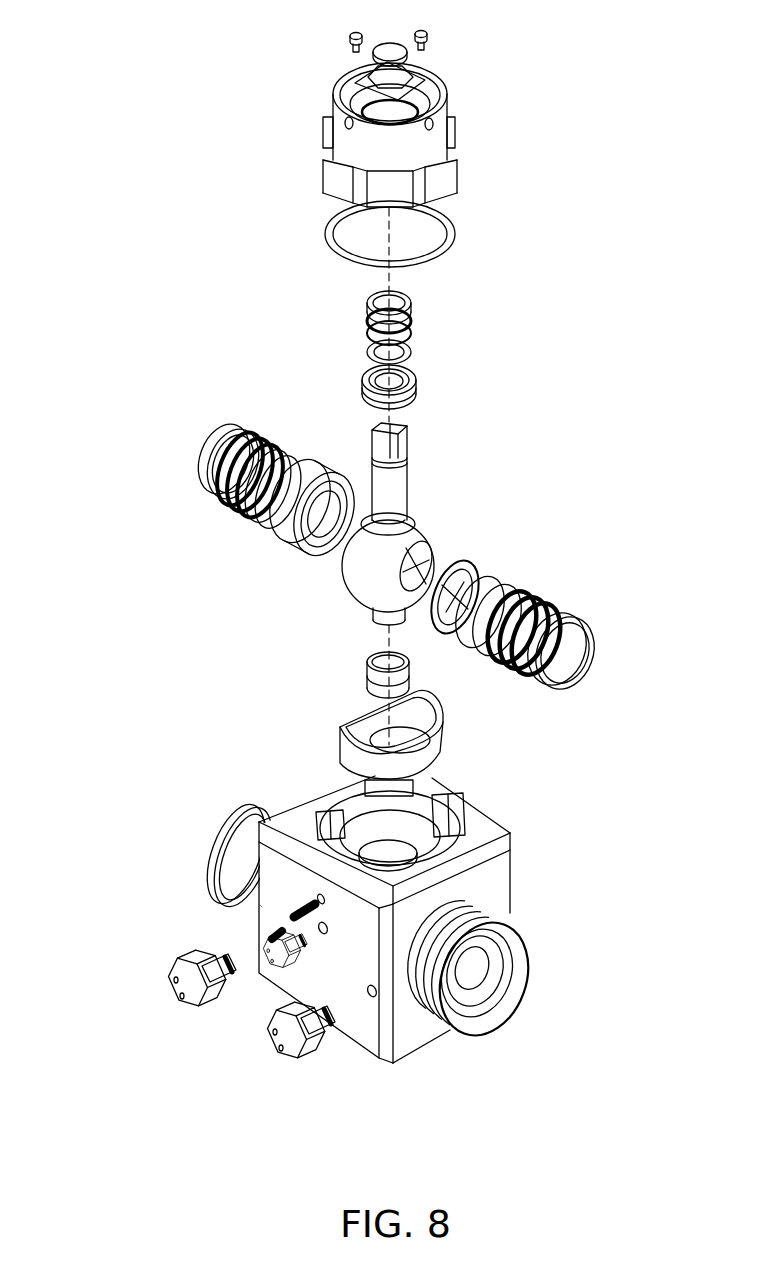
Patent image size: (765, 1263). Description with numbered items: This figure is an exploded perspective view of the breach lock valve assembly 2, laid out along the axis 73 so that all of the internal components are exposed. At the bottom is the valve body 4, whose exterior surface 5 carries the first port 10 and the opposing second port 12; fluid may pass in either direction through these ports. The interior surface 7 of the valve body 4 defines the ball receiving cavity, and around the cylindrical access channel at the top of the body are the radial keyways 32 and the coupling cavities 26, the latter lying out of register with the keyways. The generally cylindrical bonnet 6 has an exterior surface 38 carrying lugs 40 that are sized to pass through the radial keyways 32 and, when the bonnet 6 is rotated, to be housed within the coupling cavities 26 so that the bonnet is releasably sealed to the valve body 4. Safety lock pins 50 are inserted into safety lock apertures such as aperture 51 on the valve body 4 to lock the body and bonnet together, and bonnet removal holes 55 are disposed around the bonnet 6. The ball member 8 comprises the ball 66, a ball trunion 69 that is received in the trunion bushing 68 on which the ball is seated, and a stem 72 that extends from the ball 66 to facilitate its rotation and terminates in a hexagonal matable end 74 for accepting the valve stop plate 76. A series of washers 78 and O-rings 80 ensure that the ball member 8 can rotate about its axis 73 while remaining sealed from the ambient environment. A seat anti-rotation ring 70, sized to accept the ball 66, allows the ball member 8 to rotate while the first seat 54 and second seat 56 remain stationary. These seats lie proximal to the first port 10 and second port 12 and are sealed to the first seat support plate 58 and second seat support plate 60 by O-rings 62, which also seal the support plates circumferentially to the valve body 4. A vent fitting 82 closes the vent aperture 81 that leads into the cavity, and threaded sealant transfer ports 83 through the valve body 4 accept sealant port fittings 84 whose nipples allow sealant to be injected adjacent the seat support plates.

The valve assembly 2 is at (118, 94).
The valve body 4 is at (367, 900).
The exterior surface 5 is at (493, 880).
The bonnet 6 is at (447, 100).
The interior surface 7 is at (338, 815).
The ball member 8 is at (367, 575).
The first port 10 is at (240, 820).
The second port 12 is at (520, 966).
The coupling cavities 26 is at (395, 830).
The radial keyways 32 is at (470, 840).
The exterior surface 38 is at (373, 111).
The lug 40 is at (447, 168).
The safety lock pins 50 is at (290, 916).
The safety lock aperture 51 is at (298, 880).
The first seat 54 is at (312, 553).
The bonnet removal holes 55 is at (344, 123).
The second seat 56 is at (472, 557).
The first seat support plate 58 is at (238, 520).
The second seat support plate 60 is at (540, 593).
The O-rings 62 is at (215, 490).
The ball 66 is at (355, 585).
The trunion bushing 68 is at (367, 673).
The ball trunion 69 is at (367, 613).
The seat anti-rotation ring 70 is at (432, 735).
The stem 72 is at (407, 470).
The axis 73 is at (358, 228).
The matable end 74 is at (372, 440).
The valve stop plate 76 is at (410, 82).
The washers 78 is at (414, 318).
The O-rings 80 is at (414, 333).
The vent aperture 81 is at (329, 930).
The vent fitting 82 is at (268, 965).
The sealant transfer ports 83 is at (266, 936).
The sealant port fittings 84 is at (195, 985).